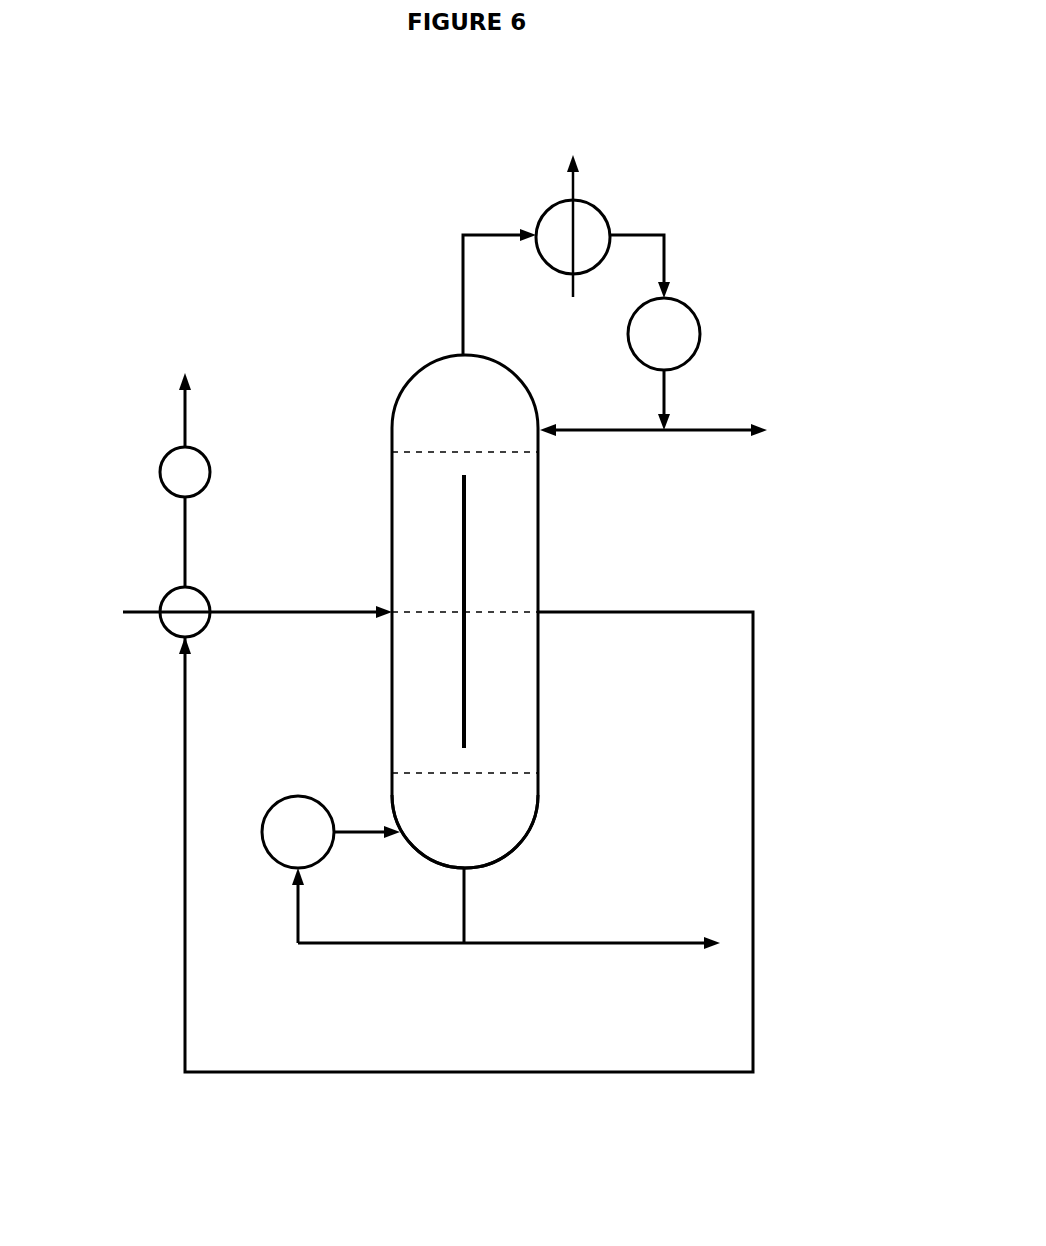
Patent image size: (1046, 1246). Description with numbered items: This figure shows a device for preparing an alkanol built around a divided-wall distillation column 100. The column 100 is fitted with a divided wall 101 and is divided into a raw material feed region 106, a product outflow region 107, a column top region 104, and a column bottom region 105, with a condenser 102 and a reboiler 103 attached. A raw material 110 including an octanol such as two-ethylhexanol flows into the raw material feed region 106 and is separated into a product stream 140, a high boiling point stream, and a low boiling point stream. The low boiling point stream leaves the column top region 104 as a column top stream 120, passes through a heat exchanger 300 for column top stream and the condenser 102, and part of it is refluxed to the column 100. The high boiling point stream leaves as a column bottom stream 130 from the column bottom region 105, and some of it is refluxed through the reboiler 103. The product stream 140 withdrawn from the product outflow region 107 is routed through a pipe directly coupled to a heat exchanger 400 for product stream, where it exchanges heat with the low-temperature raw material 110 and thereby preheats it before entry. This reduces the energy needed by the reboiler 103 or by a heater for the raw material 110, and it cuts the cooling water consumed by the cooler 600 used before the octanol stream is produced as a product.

The divided-wall distillation column 100 is at (392, 352).
The divided wall 101 is at (466, 517).
The condenser 102 is at (700, 332).
The reboiler 103 is at (276, 808).
The column top region 104 is at (417, 395).
The column bottom region 105 is at (517, 825).
The raw material feed region 106 is at (405, 675).
The product outflow region 107 is at (527, 695).
The raw material 110 is at (307, 607).
The column top stream 120 is at (482, 232).
The column bottom stream 130 is at (467, 913).
The product stream 140 is at (753, 832).
The heat exchanger for column top stream 300 is at (602, 208).
The heat exchanger for product stream 400 is at (165, 632).
The cooler 600 is at (162, 485).